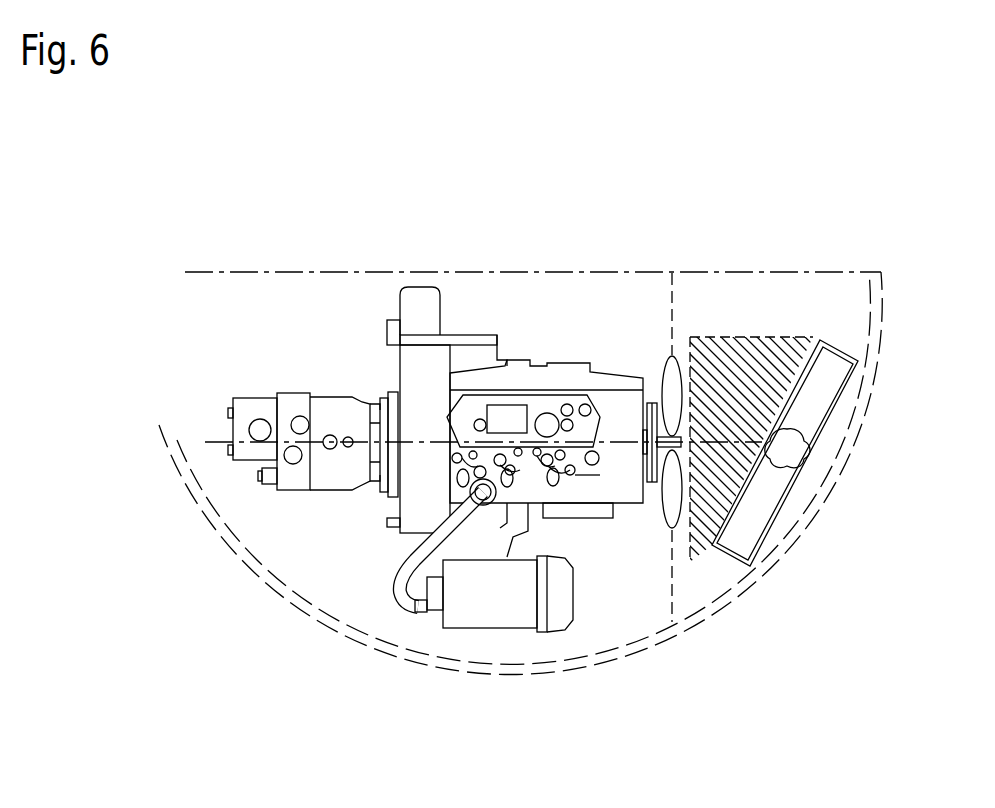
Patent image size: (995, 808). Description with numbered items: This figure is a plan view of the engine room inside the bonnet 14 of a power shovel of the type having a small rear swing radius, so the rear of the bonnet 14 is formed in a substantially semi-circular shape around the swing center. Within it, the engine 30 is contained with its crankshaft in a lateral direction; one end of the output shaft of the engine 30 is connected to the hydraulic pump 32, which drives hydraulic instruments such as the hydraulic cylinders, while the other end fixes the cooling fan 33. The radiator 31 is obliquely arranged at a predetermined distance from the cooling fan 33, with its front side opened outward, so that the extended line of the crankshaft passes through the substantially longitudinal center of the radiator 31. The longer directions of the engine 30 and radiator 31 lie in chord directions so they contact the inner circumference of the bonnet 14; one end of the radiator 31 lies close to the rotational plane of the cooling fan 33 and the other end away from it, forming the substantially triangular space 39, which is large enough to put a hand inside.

The bonnet 14 is at (369, 644).
The engine 30 is at (543, 345).
The radiator 31 is at (822, 375).
The hydraulic pump 32 is at (335, 413).
The cooling fan 33 is at (668, 357).
The space 39 is at (750, 350).